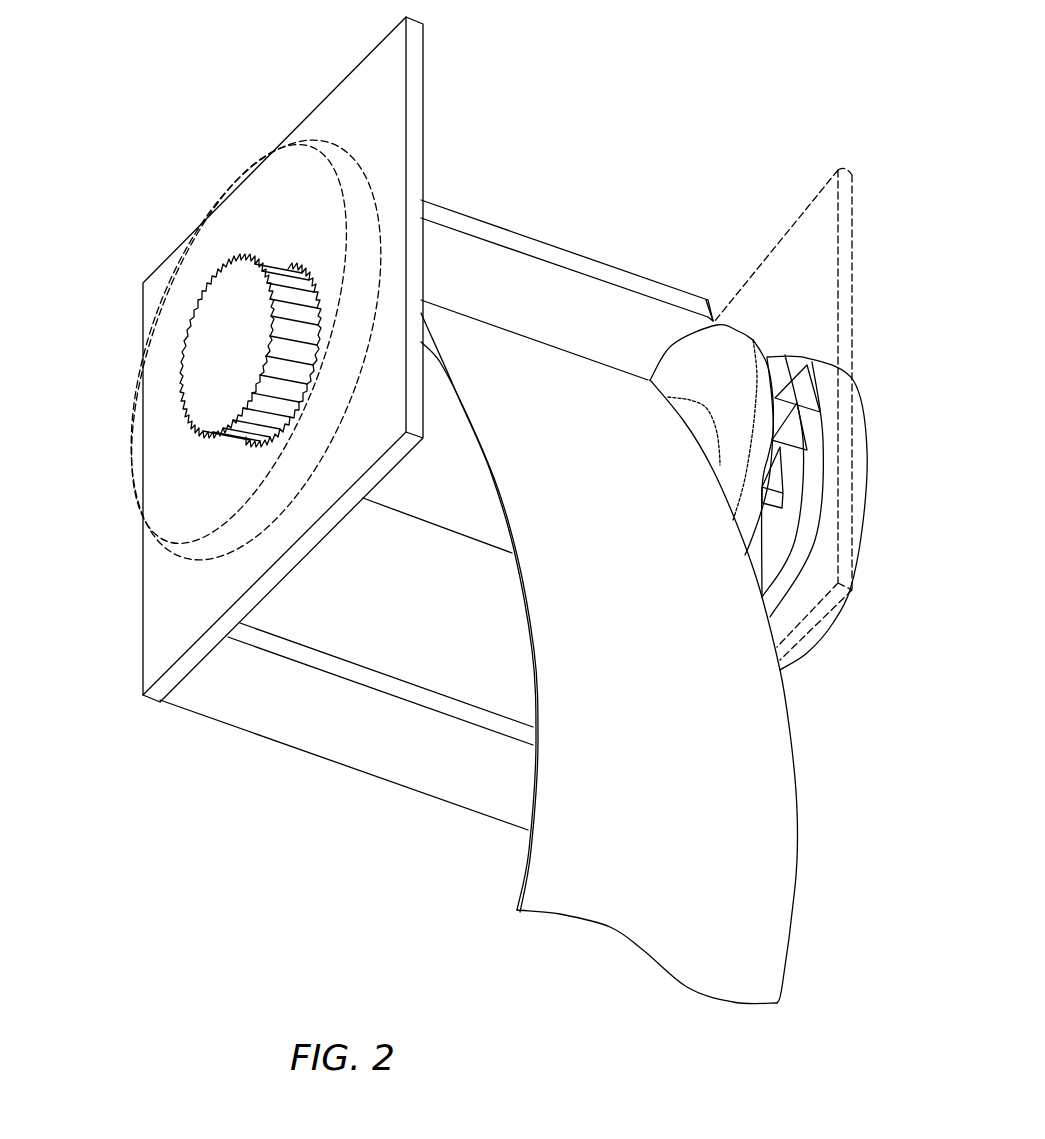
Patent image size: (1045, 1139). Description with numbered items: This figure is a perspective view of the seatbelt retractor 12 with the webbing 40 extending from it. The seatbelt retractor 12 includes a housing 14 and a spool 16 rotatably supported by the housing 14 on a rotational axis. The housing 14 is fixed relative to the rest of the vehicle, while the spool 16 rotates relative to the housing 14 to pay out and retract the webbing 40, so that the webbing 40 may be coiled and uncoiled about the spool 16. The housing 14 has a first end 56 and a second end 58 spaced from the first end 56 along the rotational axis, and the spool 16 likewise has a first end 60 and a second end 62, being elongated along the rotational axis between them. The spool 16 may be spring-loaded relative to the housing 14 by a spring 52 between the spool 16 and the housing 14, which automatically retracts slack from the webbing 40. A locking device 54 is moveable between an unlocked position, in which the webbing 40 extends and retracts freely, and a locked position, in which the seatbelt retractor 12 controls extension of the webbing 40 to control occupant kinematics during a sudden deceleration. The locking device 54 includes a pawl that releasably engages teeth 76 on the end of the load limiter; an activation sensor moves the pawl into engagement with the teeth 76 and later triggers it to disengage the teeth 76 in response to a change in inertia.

The seatbelt retractor 12 is at (637, 118).
The housing 14 is at (238, 359).
The spool 16 is at (730, 366).
The webbing 40 is at (797, 810).
The spring 52 is at (795, 478).
The locking device 54 is at (130, 422).
The first end of the housing 56 is at (178, 186).
The second end of the housing 58 is at (864, 152).
The first end of the spool 60 is at (362, 530).
The second end of the spool 62 is at (714, 322).
The teeth 76 is at (292, 266).